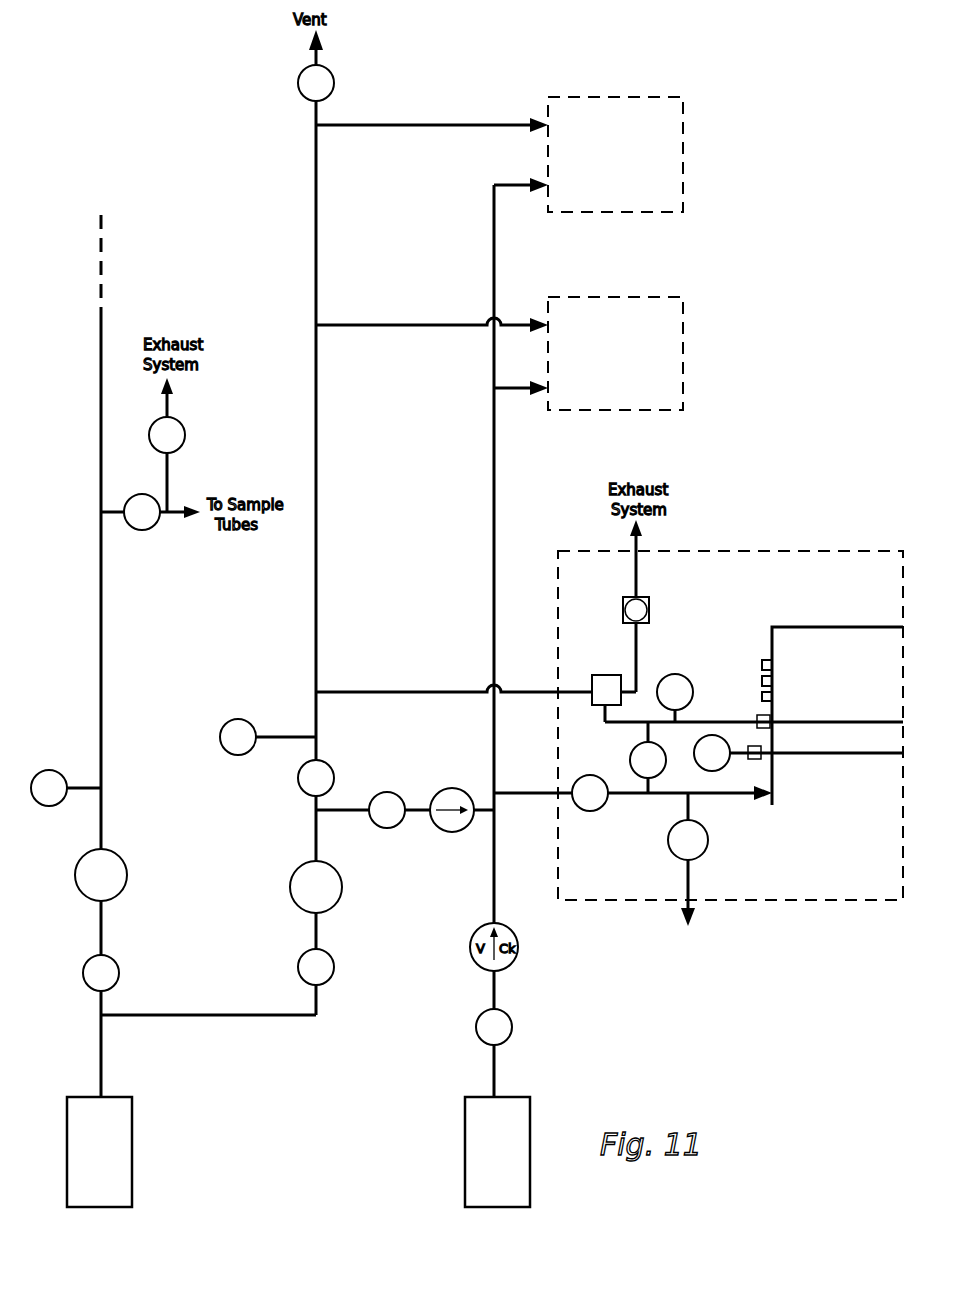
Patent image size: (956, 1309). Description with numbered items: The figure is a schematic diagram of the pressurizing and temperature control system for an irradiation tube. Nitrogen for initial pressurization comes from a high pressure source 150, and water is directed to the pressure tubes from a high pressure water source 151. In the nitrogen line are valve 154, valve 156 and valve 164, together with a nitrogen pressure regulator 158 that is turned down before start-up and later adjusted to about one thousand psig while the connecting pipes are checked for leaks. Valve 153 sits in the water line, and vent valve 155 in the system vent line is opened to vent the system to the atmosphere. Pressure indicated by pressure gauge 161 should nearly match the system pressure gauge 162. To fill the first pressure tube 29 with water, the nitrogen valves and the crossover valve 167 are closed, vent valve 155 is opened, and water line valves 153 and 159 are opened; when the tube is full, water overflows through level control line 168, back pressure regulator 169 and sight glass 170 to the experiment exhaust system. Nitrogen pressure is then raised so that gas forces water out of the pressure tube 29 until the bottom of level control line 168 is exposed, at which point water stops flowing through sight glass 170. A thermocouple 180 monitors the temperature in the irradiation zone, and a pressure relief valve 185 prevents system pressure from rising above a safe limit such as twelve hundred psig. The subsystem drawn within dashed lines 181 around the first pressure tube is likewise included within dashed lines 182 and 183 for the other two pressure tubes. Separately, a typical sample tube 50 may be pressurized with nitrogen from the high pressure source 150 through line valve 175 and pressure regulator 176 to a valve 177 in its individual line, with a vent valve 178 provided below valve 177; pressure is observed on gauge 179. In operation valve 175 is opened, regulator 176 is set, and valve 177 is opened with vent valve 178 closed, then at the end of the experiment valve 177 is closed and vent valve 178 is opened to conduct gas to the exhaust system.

The first pressure tube 29 is at (816, 627).
The sample tube 50 is at (764, 660).
The high pressure source 150 is at (118, 1097).
The high pressure water source 151 is at (516, 1097).
The valve 153 is at (510, 1020).
The valve 154 is at (394, 827).
The vent valve 155 is at (333, 78).
The valve 156 is at (332, 772).
The nitrogen pressure regulator 158 is at (340, 895).
The valve 159 is at (596, 811).
The pressure gauge 161 is at (675, 674).
The system pressure gauge 162 is at (238, 719).
The valve 164 is at (333, 962).
The crossover valve 167 is at (630, 757).
The level control line 168 is at (830, 722).
The back pressure regulator 169 is at (605, 675).
The sight glass 170 is at (649, 603).
The line valve 175 is at (114, 960).
The pressure regulator 176 is at (120, 858).
The valve 177 is at (152, 527).
The vent valve 178 is at (184, 428).
The gauge 179 is at (44, 771).
The thermocouple 180 is at (697, 766).
The dashed lines 181 is at (718, 551).
The dashed lines 182 is at (562, 297).
The dashed lines 183 is at (562, 97).
The pressure relief valve 185 is at (707, 842).